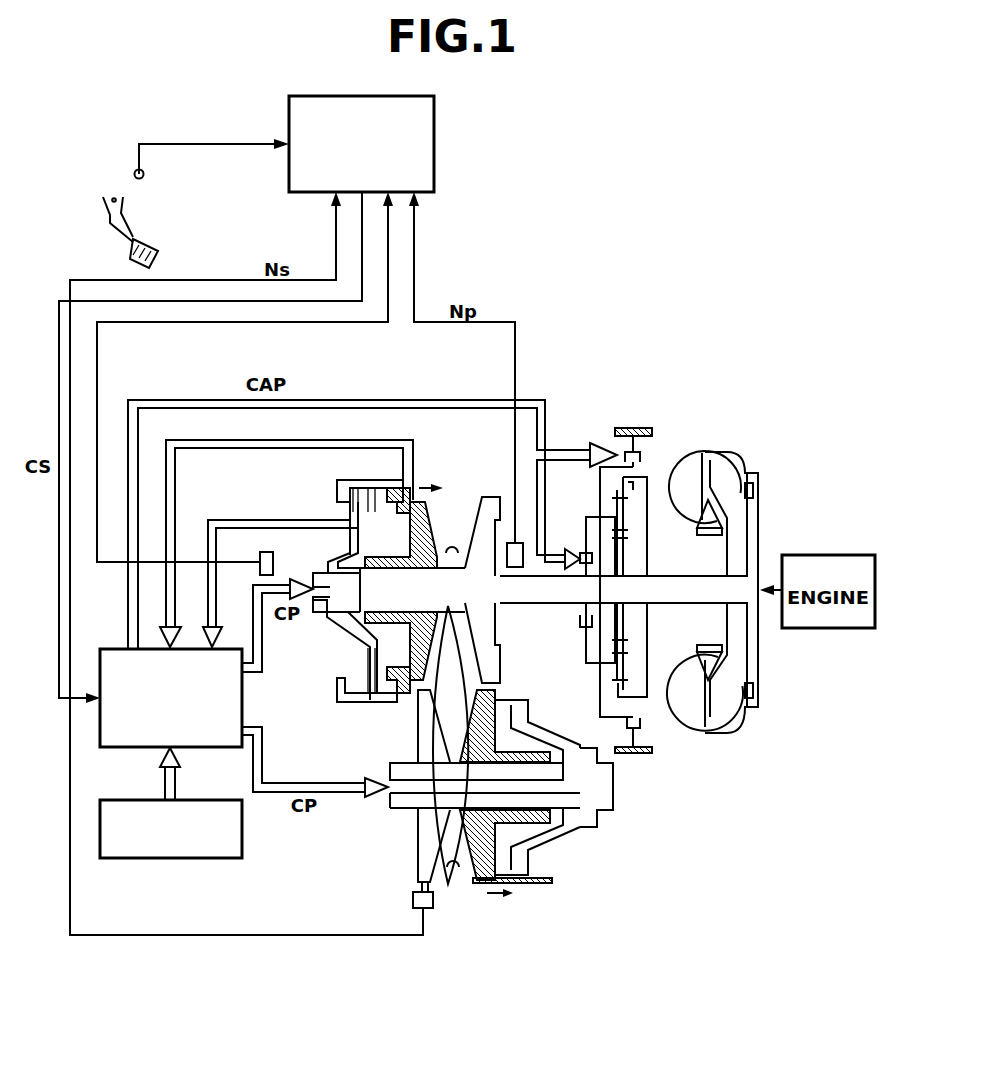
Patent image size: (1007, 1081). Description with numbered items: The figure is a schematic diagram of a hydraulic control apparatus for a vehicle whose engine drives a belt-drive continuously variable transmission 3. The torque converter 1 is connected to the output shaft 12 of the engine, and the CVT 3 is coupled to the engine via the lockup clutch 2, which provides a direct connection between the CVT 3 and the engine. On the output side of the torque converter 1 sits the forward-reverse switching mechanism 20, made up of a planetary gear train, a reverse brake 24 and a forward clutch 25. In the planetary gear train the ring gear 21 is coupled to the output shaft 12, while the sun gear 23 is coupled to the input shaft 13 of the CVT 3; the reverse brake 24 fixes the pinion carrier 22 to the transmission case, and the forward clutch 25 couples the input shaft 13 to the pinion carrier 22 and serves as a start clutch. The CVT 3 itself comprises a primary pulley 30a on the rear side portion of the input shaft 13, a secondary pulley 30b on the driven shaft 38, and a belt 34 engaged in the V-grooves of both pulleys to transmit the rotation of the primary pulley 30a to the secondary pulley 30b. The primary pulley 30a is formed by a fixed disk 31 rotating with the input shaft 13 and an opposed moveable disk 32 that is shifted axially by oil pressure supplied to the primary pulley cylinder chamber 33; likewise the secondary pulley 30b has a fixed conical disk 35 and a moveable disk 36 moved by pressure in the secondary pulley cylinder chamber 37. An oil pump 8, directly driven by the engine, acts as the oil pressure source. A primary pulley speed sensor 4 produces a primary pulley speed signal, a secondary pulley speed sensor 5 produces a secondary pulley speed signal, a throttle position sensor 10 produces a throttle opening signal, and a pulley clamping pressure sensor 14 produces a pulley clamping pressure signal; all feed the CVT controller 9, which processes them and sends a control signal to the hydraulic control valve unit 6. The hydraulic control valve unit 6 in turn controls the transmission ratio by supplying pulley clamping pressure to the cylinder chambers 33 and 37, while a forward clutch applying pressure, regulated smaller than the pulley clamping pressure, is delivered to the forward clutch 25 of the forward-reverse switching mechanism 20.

The torque converter 1 is at (723, 452).
The lockup clutch 2 is at (758, 658).
The belt-drive continuously variable transmission 3 is at (480, 920).
The primary pulley speed sensor 4 is at (516, 543).
The secondary pulley speed sensor 5 is at (428, 908).
The hydraulic control valve unit 6 is at (138, 747).
The oil pump 8 is at (197, 858).
The CVT controller 9 is at (434, 143).
The throttle position sensor 10 is at (134, 173).
The output shaft 12 is at (666, 626).
The input shaft 13 is at (538, 597).
The pulley clamping pressure sensor 14 is at (262, 575).
The forward-reverse switching mechanism 20 is at (647, 603).
The ring gear 21 is at (640, 473).
The pinion carrier 22 is at (588, 517).
The sun gear 23 is at (625, 552).
The reverse brake 24 is at (625, 452).
The forward clutch 25 is at (583, 630).
The primary pulley 30a is at (510, 585).
The secondary pulley 30b is at (512, 833).
The fixed disk 31 is at (486, 497).
The moveable disk 32 is at (432, 527).
The primary pulley cylinder chamber 33 is at (390, 528).
The belt 34 is at (460, 675).
The fixed conical disk 35 is at (423, 740).
The moveable disk 36 is at (540, 885).
The secondary pulley cylinder chamber 37 is at (560, 823).
The driven shaft 38 is at (613, 787).